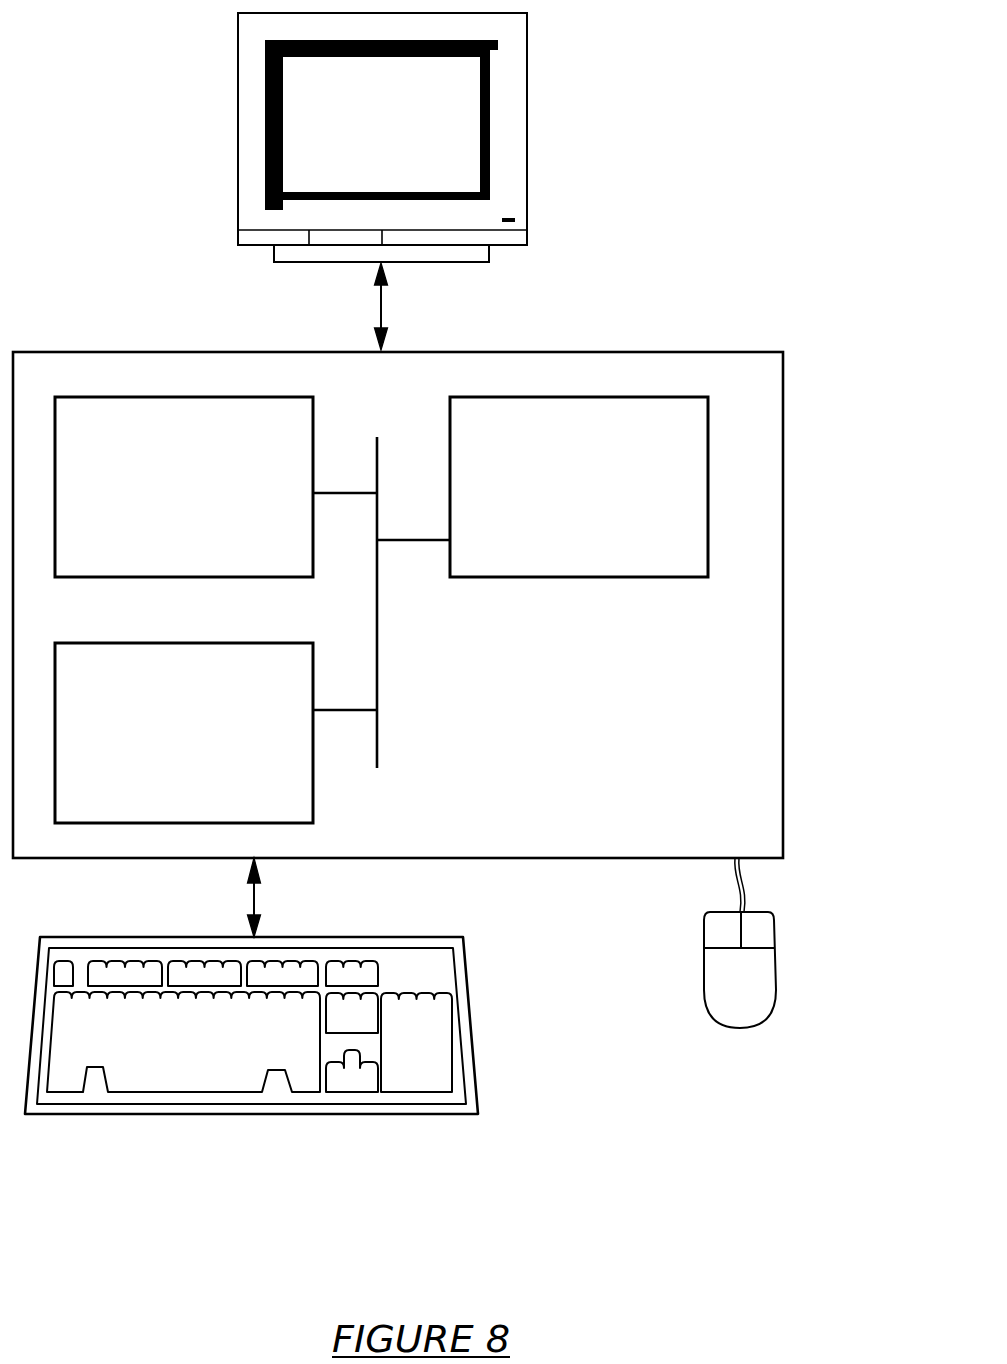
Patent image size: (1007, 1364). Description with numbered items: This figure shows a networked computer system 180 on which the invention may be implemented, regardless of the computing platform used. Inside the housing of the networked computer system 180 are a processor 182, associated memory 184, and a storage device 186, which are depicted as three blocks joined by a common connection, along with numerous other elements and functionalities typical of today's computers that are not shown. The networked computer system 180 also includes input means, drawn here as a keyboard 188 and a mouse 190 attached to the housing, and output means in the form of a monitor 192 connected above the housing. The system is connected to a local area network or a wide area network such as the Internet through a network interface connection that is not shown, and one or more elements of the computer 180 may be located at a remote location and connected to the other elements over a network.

The networked computer system 180 is at (810, 183).
The processor 182 is at (575, 499).
The memory 184 is at (164, 499).
The storage device 186 is at (159, 747).
The keyboard 188 is at (153, 1068).
The mouse 190 is at (715, 993).
The monitor 192 is at (404, 142).